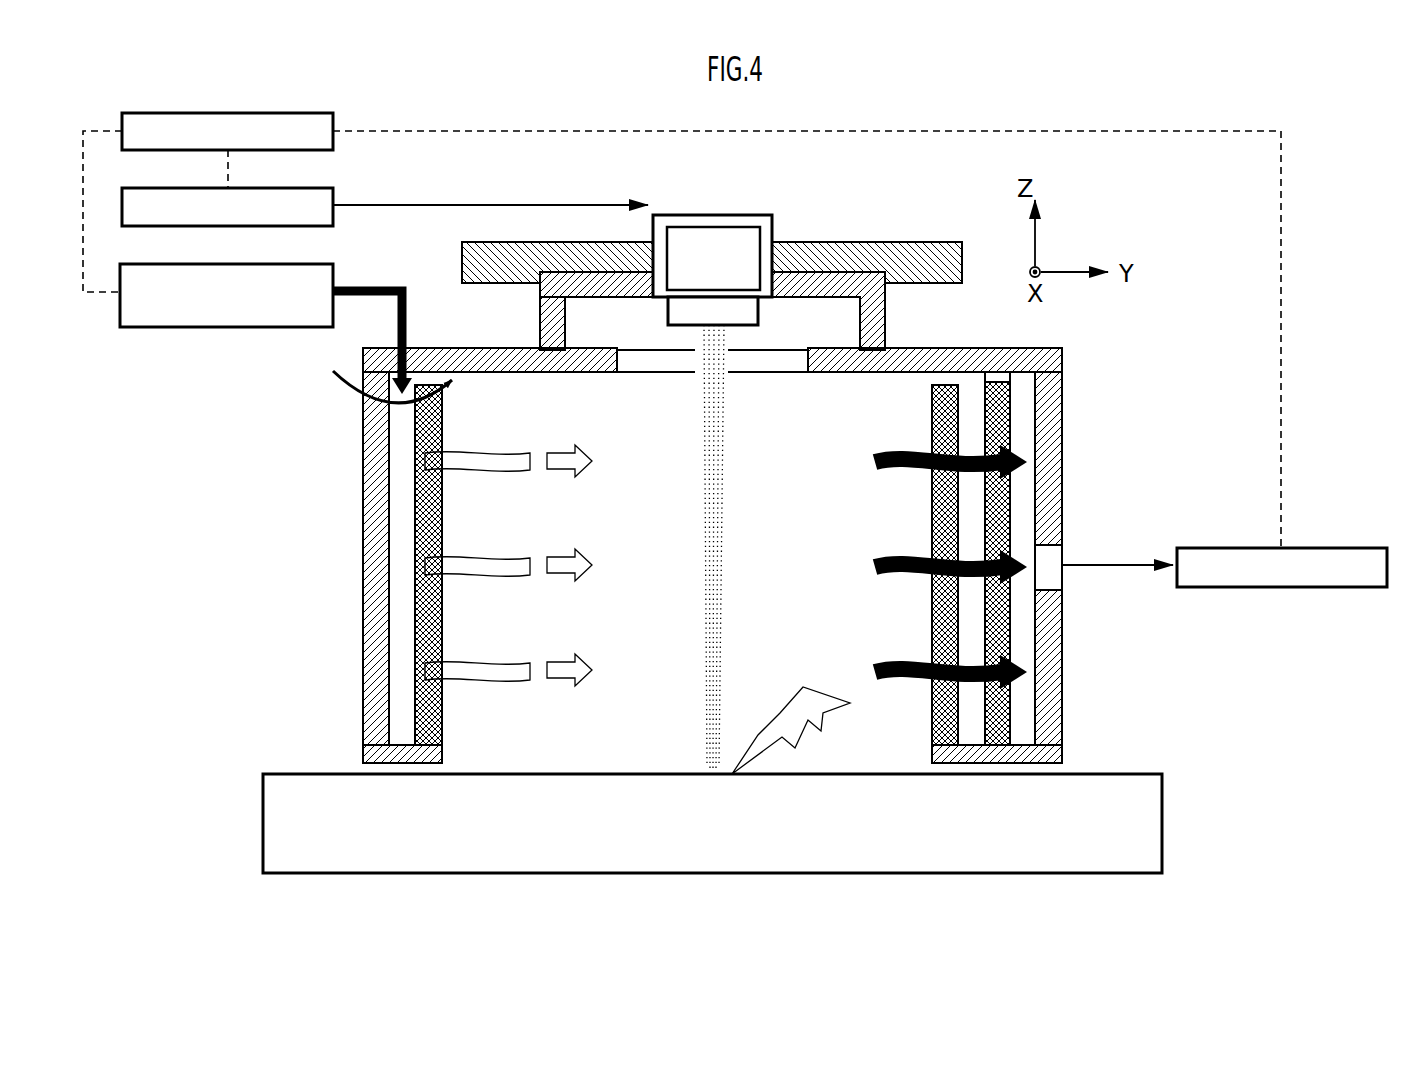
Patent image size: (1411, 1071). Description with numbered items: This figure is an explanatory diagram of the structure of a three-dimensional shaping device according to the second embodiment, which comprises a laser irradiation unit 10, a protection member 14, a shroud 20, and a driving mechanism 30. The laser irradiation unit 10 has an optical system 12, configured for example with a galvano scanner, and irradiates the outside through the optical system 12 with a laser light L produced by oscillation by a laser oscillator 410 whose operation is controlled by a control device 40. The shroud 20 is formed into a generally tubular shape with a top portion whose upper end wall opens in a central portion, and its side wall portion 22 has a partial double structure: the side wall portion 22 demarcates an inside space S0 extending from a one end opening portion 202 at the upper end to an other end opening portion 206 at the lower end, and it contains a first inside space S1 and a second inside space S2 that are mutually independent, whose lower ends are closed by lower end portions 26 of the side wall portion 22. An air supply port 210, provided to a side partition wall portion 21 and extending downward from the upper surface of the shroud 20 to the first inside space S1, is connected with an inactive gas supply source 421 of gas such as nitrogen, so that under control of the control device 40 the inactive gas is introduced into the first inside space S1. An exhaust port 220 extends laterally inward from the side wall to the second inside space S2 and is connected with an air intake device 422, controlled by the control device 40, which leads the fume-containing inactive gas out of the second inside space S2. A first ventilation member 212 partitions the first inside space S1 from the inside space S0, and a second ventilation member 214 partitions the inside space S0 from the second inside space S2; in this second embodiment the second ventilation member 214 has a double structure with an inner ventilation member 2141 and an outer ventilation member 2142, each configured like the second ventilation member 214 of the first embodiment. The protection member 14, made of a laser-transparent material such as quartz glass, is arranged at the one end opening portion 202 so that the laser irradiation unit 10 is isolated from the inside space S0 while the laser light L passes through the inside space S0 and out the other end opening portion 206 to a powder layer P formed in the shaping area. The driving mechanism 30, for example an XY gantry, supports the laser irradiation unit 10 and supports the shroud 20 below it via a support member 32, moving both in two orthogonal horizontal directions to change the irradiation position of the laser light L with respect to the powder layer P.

The laser irradiation unit 10 is at (717, 233).
The optical system 12 is at (734, 228).
The protection member 14 is at (655, 358).
The shroud 20 is at (737, 479).
The one end opening portion 202 is at (805, 362).
The side partition wall portion 21 is at (378, 379).
The air supply port 210 is at (411, 338).
The first ventilation member 212 is at (412, 462).
The second ventilation member 214 is at (1067, 558).
The inner ventilation member 2141 is at (960, 402).
The outer ventilation member 2142 is at (1010, 423).
The side wall portion 22 is at (362, 500).
The exhaust port 220 is at (1055, 548).
The lower end portions 26 is at (400, 742).
The driving mechanism 30 is at (898, 239).
The support member 32 is at (537, 330).
The control device 40 is at (284, 113).
The laser oscillator 410 is at (283, 189).
The inactive gas supply source 421 is at (283, 265).
The air intake device 422 is at (1340, 548).
The laser light L is at (727, 472).
The powder layer P is at (1115, 770).
The other end opening portion 206 is at (848, 752).
The inside space S0 is at (465, 635).
The first inside space S1 is at (405, 612).
The second inside space S2 is at (1030, 613).